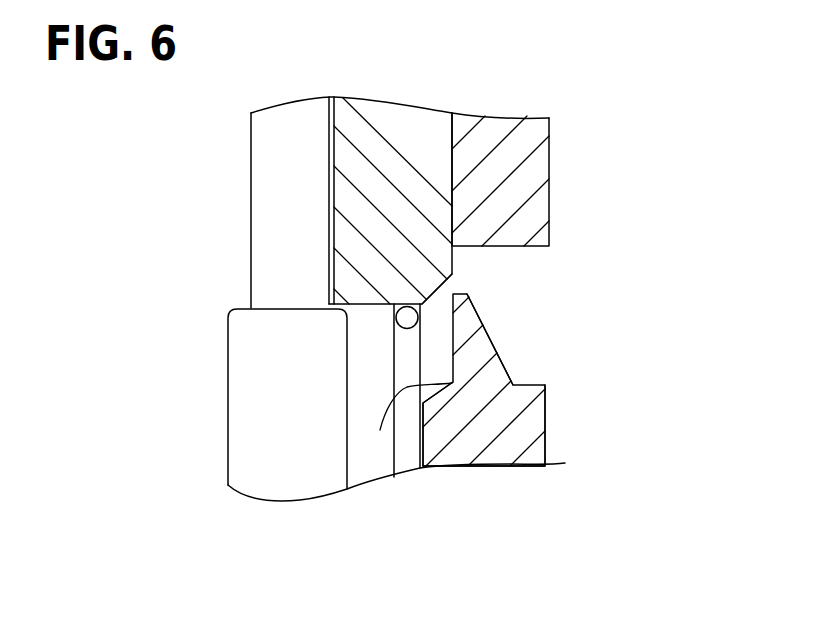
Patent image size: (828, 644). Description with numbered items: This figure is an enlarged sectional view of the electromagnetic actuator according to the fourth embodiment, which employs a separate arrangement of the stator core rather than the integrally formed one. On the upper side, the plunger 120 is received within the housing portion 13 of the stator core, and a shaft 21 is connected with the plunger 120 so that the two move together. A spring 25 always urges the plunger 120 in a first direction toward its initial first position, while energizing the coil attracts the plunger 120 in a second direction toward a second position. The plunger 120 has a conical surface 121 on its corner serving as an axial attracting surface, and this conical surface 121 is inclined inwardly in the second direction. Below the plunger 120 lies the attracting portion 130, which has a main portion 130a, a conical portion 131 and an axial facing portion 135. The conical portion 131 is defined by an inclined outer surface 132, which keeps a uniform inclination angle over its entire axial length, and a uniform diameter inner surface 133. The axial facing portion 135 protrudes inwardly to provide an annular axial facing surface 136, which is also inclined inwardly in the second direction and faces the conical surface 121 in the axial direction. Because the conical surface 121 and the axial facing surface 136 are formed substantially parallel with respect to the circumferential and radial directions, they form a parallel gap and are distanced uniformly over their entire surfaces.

The housing portion 13 is at (517, 177).
The shaft 21 is at (247, 405).
The spring 25 is at (407, 467).
The plunger 120 is at (398, 127).
The conical surface 121 is at (443, 283).
The attracting portion 130 is at (575, 452).
The main portion 130a is at (500, 452).
The conical portion 131 is at (453, 355).
The inclined outer surface 132 is at (497, 357).
The uniform diameter inner surface 133 is at (453, 357).
The axial facing portion 135 is at (440, 402).
The axial facing surface 136 is at (380, 430).